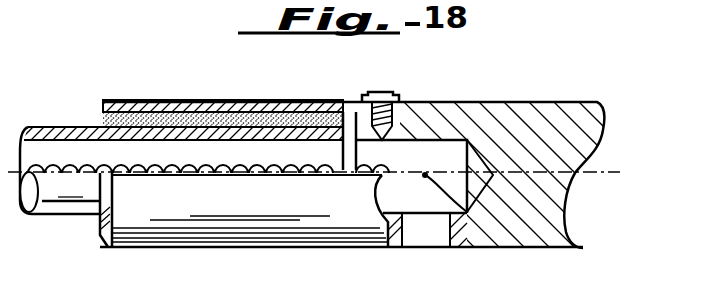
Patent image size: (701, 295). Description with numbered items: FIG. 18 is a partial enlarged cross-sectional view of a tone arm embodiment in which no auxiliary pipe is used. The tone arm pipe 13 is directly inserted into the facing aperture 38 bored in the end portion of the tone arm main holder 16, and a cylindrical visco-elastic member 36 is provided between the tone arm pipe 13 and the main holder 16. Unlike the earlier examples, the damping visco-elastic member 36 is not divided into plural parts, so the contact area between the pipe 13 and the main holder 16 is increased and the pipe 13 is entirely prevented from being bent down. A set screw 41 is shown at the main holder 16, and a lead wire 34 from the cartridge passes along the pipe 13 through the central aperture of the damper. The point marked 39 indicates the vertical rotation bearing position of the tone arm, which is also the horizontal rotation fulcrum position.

The tone arm pipe 13 is at (70, 220).
The tone arm main holder 16 is at (547, 115).
The lead wire 34 is at (232, 176).
The visco-elastic member 36 is at (306, 107).
The facing aperture 38 is at (472, 107).
The vertical rotation bearing position 39 is at (402, 176).
The set screw 41 is at (394, 97).